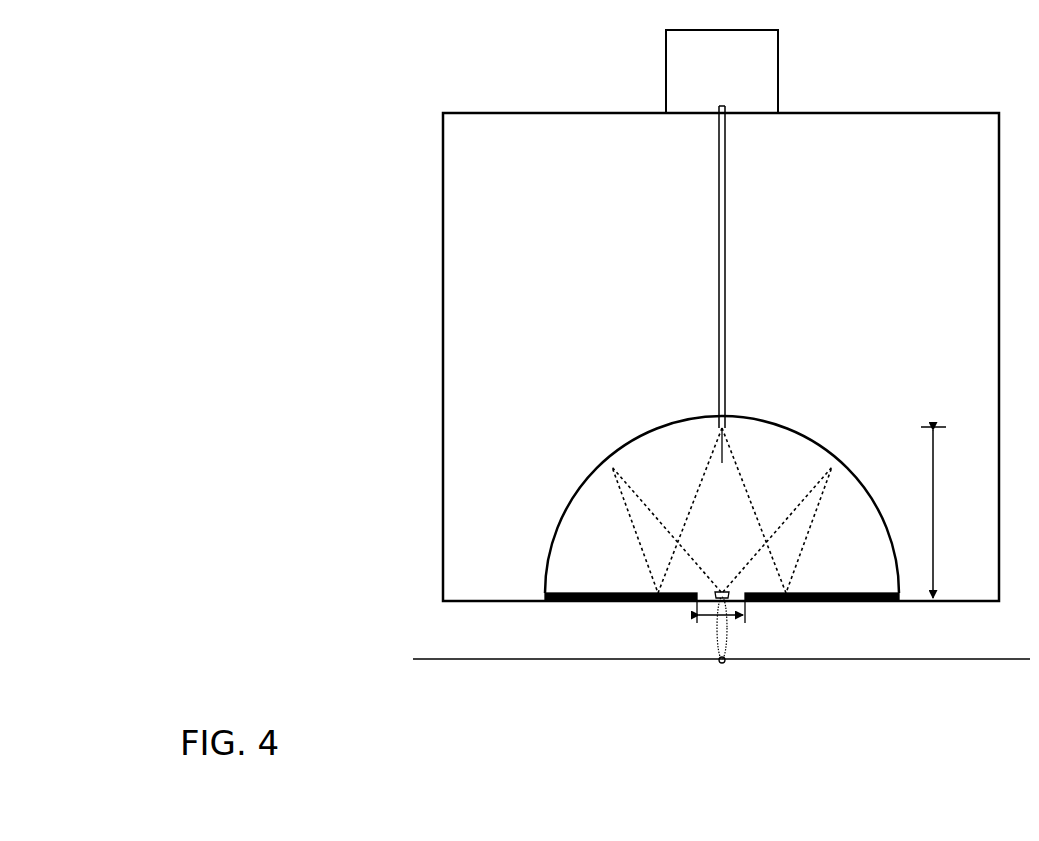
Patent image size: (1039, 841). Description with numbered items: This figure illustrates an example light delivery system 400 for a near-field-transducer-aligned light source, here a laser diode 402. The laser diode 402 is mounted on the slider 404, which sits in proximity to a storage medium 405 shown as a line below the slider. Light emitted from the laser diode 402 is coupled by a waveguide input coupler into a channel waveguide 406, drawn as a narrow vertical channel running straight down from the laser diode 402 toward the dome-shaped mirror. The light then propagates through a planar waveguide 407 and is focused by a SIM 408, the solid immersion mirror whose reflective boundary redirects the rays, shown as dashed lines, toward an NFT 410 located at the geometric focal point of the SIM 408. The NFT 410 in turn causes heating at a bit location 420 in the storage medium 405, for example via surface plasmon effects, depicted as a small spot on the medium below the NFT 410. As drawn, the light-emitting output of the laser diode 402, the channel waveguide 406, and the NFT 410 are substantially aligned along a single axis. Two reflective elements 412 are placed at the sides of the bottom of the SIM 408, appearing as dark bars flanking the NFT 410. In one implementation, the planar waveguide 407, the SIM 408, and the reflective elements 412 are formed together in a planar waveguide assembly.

The light delivery system 400 is at (288, 119).
The laser diode 402 is at (722, 71).
The slider 404 is at (721, 357).
The storage medium 405 is at (721, 682).
The channel waveguide 406 is at (719, 298).
The planar waveguide 407 is at (634, 430).
The SIM 408 is at (580, 492).
The NFT 410 is at (727, 597).
The reflective elements 412 is at (580, 601).
The bit location 420 is at (733, 670).